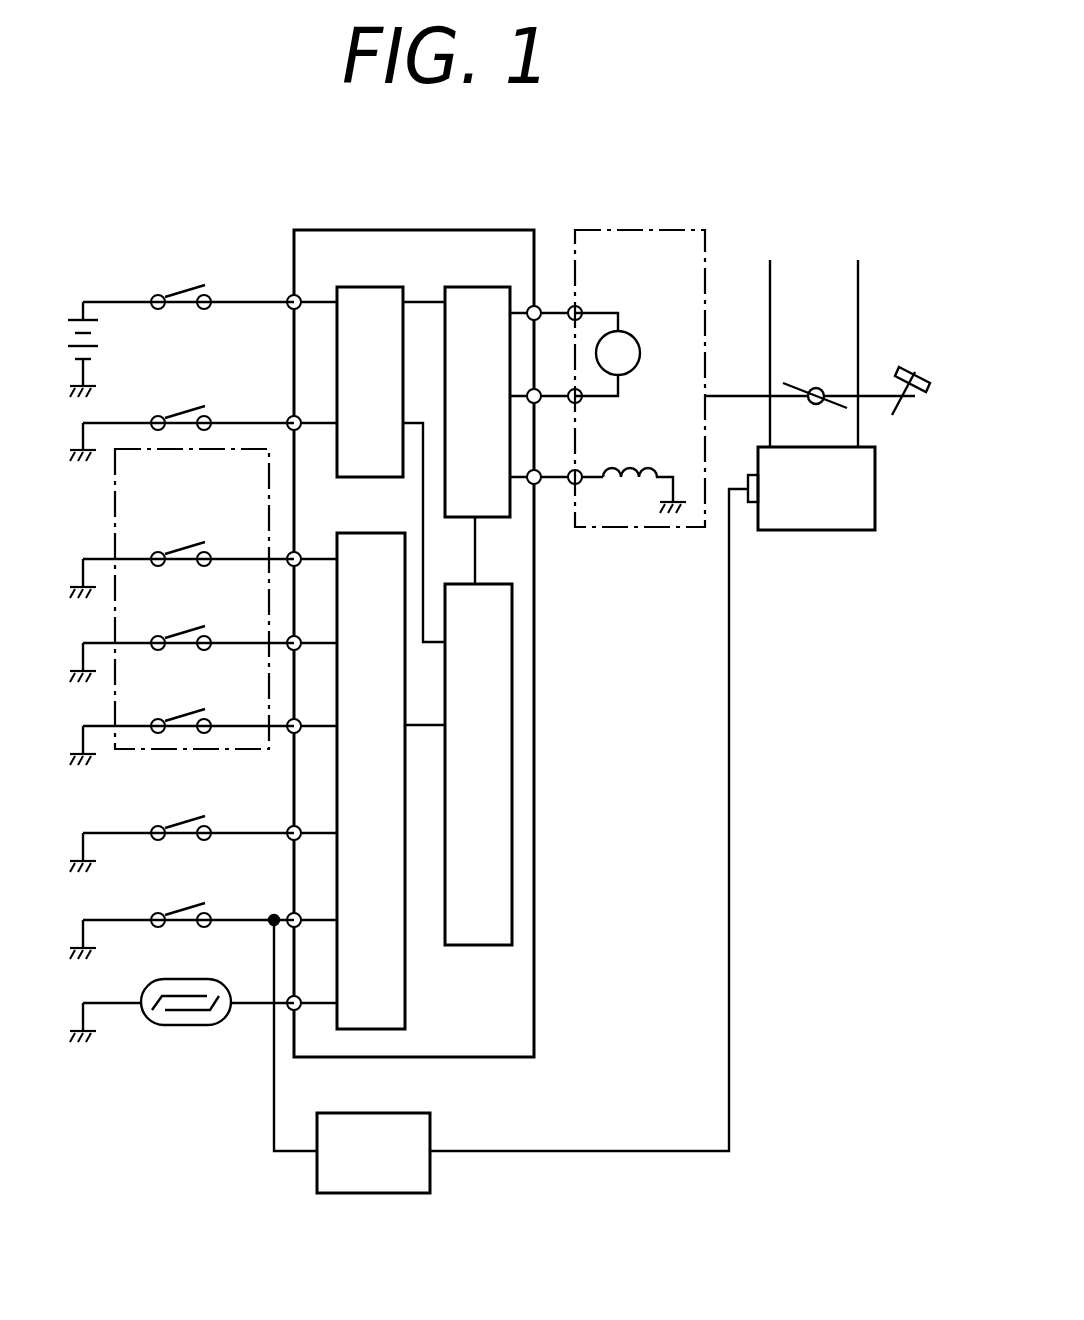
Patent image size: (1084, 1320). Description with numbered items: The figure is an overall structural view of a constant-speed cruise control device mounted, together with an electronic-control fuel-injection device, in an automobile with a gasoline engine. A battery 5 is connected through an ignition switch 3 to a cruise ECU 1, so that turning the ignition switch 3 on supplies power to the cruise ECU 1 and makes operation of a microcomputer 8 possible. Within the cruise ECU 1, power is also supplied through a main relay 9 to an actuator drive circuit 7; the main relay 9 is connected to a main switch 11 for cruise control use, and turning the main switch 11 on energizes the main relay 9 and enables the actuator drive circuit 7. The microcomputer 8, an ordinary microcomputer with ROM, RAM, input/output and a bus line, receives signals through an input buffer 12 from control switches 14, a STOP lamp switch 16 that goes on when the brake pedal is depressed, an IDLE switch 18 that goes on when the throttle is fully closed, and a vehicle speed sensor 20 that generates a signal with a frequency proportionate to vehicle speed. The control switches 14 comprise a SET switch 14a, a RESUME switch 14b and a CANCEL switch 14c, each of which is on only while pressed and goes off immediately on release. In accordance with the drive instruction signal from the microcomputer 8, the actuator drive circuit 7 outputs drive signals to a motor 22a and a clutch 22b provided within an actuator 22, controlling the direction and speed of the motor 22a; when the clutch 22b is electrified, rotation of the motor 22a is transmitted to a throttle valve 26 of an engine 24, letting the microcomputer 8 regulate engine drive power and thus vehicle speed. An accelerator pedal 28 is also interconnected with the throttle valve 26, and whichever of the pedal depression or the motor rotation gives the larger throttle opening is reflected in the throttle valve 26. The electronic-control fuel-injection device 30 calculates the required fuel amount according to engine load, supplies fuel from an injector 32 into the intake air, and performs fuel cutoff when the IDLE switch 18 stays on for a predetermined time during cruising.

The cruise ECU 1 is at (487, 230).
The ignition switch 3 is at (174, 292).
The battery 5 is at (98, 340).
The actuator drive circuit 7 is at (490, 517).
The microcomputer 8 is at (488, 945).
The main relay 9 is at (375, 477).
The main switch 11 is at (175, 405).
The input buffer 12 is at (407, 1005).
The control switches 14 is at (177, 607).
The SET switch 14a is at (170, 549).
The RESUME switch 14b is at (170, 632).
The CANCEL switch 14c is at (170, 717).
The STOP lamp switch 16 is at (172, 820).
The IDLE switch 18 is at (172, 906).
The vehicle speed sensor 20 is at (180, 979).
The actuator 22 is at (648, 351).
The motor 22a is at (640, 347).
The clutch 22b is at (640, 470).
The engine 24 is at (875, 510).
The throttle valve 26 is at (797, 383).
The accelerator pedal 28 is at (915, 365).
The electronic-control fuel-injection device 30 is at (430, 1120).
The injector 32 is at (752, 505).